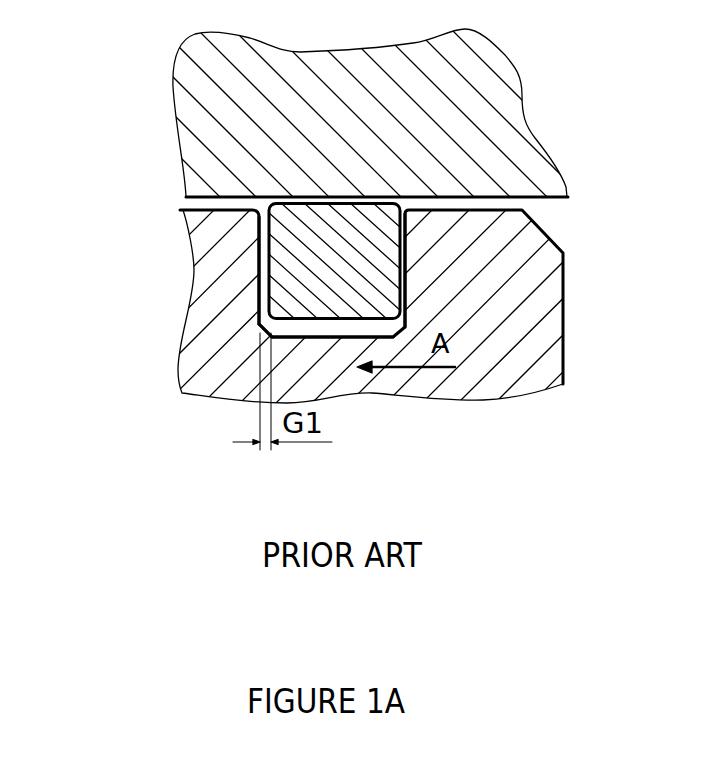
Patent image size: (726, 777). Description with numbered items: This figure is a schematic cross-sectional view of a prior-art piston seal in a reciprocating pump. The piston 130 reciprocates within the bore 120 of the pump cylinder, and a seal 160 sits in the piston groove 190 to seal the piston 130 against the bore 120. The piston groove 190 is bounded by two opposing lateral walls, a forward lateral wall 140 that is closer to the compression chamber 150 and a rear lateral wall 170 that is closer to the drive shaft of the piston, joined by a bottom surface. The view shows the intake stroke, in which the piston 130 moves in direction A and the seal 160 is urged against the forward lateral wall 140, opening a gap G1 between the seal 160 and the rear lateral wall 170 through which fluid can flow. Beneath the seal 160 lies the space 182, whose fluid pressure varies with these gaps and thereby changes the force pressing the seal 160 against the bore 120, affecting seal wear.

The bore 120 is at (240, 197).
The piston 130 is at (478, 284).
The forward lateral wall 140 is at (412, 271).
The compression chamber 150 is at (652, 236).
The seal 160 is at (310, 252).
The rear lateral wall 170 is at (248, 280).
The space 182 is at (298, 328).
The piston groove 190 is at (317, 346).